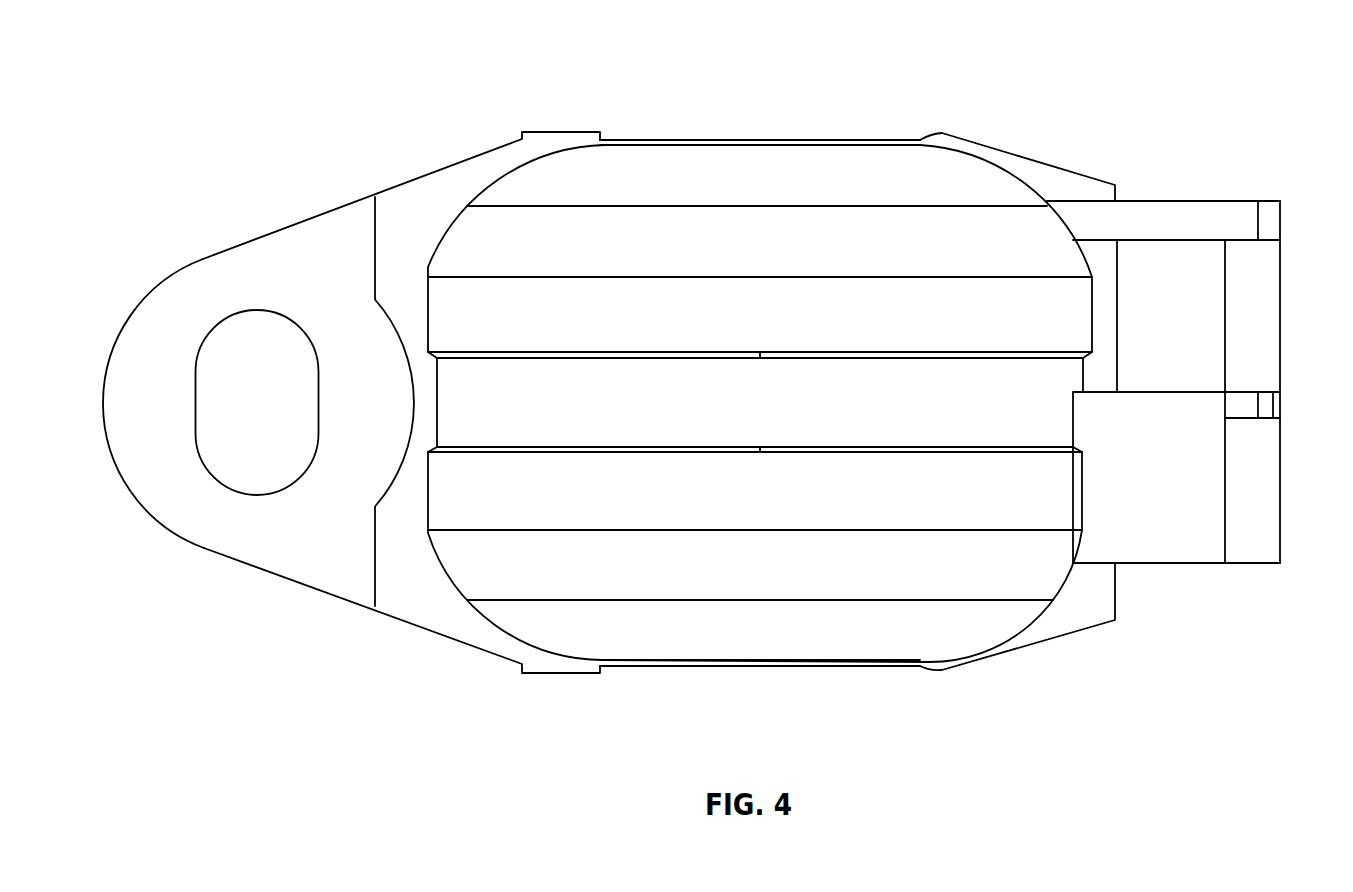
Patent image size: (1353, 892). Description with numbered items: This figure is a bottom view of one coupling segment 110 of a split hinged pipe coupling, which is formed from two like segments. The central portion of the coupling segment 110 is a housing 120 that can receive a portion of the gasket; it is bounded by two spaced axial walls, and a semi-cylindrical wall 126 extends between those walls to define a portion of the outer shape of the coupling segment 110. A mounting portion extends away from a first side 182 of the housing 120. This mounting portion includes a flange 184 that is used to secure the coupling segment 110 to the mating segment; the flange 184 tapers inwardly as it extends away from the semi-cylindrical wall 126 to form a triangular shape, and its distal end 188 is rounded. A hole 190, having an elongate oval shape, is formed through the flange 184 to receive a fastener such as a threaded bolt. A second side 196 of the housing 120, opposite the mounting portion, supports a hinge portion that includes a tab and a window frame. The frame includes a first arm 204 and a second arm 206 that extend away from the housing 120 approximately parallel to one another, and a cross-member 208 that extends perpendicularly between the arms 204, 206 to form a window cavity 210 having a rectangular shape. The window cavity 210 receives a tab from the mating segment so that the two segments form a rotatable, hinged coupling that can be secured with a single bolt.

The coupling segment 110 is at (1036, 89).
The housing 120 is at (590, 121).
The semi-cylindrical wall 126 is at (748, 237).
The first side 182 is at (346, 166).
The flange 184 is at (175, 507).
The distal end 188 is at (102, 393).
The hole 190 is at (258, 495).
The second side 196 is at (1246, 172).
The first arm 204 is at (1248, 200).
The second arm 206 is at (1183, 390).
The cross-member 208 is at (1255, 308).
The window cavity 210 is at (1148, 276).